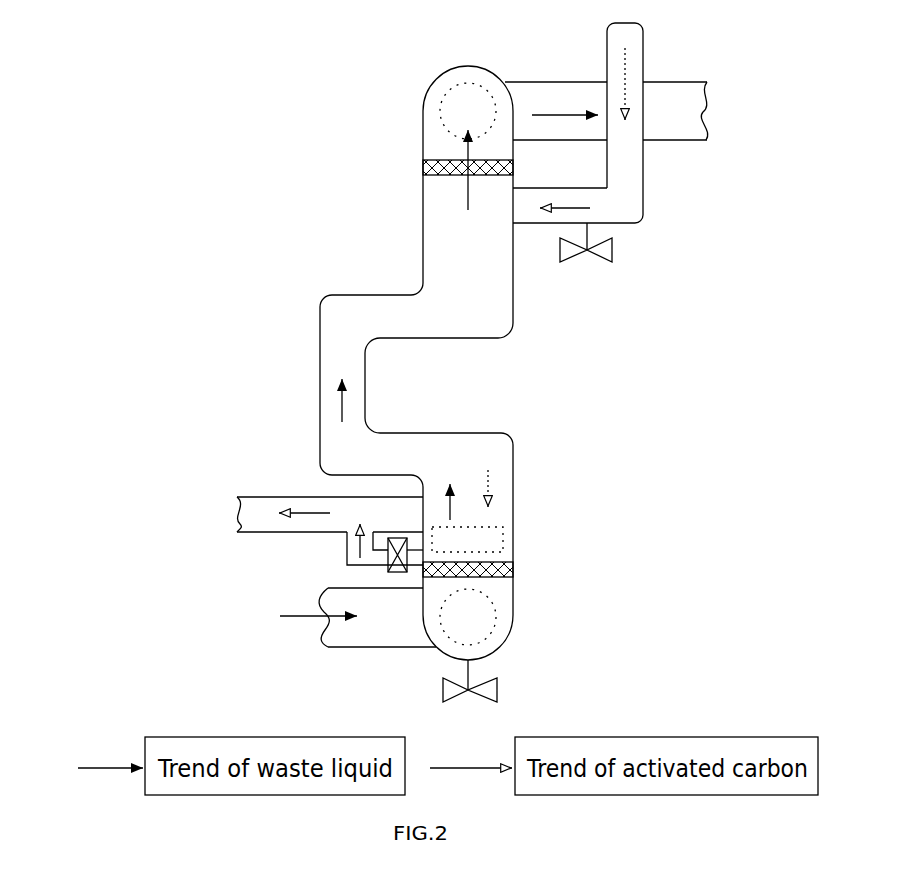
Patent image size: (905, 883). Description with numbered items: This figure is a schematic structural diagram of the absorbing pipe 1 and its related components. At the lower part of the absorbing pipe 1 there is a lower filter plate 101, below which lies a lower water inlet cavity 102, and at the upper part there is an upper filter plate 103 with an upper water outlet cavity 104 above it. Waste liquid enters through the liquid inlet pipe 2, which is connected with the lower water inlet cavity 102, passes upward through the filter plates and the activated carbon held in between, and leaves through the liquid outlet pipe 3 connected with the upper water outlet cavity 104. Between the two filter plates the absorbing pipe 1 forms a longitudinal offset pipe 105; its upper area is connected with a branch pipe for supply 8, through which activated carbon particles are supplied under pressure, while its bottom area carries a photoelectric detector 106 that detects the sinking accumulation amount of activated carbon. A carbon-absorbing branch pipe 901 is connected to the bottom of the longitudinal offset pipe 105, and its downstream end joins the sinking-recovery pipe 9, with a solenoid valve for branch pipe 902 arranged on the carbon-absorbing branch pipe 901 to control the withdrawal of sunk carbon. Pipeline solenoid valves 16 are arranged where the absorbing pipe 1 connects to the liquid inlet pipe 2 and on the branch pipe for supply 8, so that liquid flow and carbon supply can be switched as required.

The absorbing pipe 1 is at (515, 482).
The liquid inlet pipe 2 is at (393, 647).
The liquid outlet pipe 3 is at (533, 82).
The branch pipe for supply 8 is at (628, 223).
The sinking-recovery pipe 9 is at (273, 498).
The pipeline solenoid valve 16 is at (580, 258).
The lower filter plate 101 is at (512, 567).
The lower water inlet cavity 102 is at (503, 595).
The upper filter plate 103 is at (430, 167).
The upper water outlet cavity 104 is at (437, 137).
The longitudinal offset pipe 105 is at (360, 297).
The photoelectric detector 106 is at (512, 530).
The carbon-absorbing branch pipe 901 is at (345, 552).
The solenoid valve for branch pipe 902 is at (398, 572).